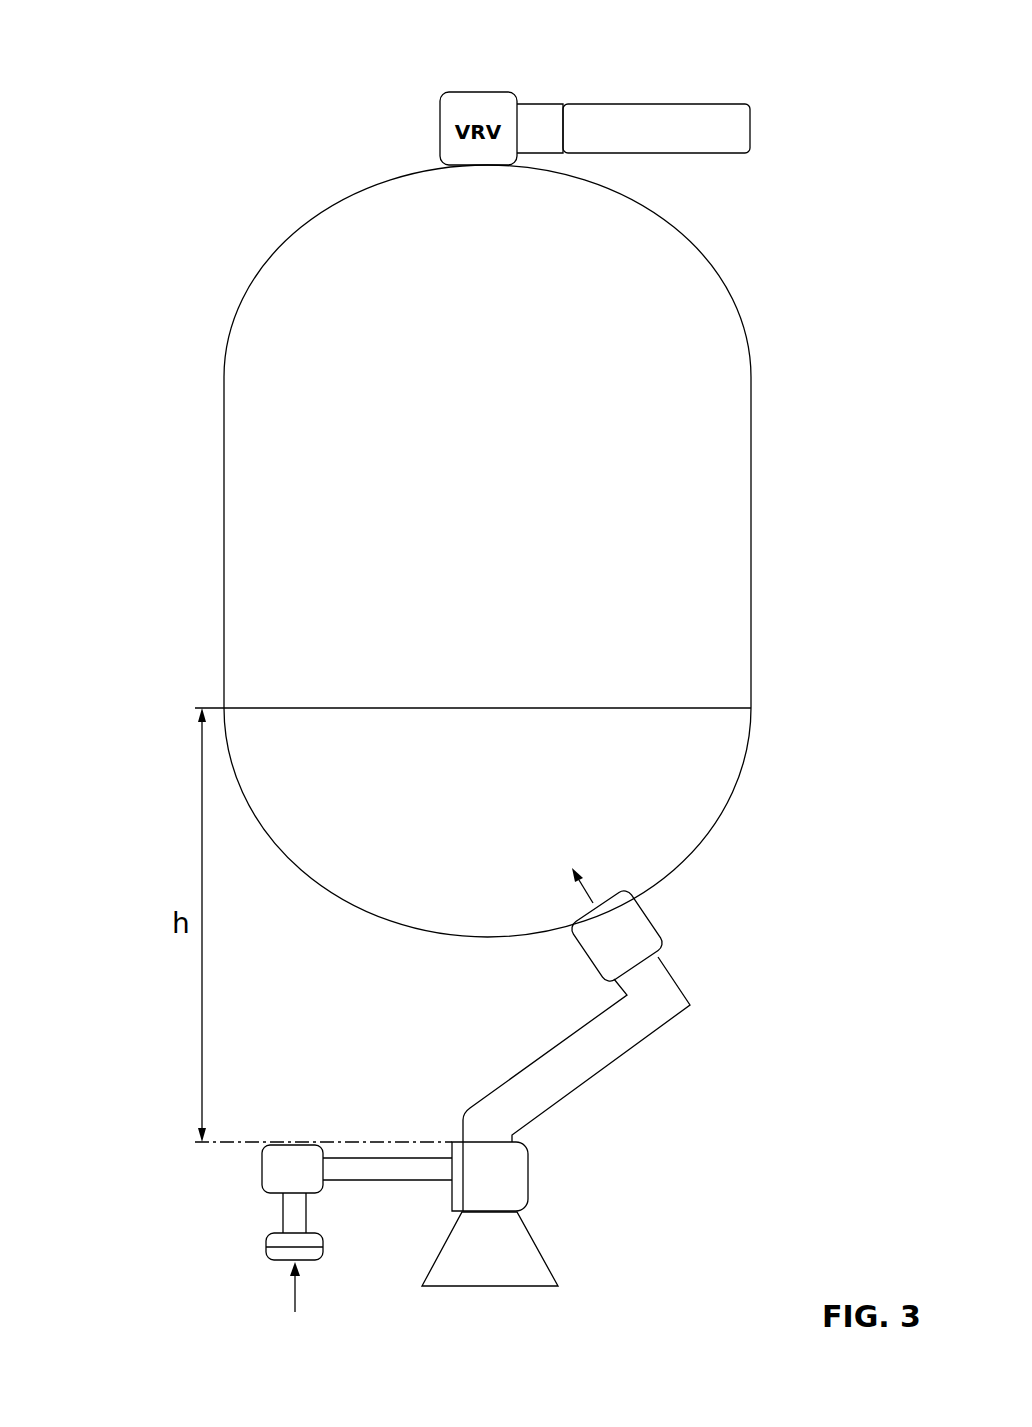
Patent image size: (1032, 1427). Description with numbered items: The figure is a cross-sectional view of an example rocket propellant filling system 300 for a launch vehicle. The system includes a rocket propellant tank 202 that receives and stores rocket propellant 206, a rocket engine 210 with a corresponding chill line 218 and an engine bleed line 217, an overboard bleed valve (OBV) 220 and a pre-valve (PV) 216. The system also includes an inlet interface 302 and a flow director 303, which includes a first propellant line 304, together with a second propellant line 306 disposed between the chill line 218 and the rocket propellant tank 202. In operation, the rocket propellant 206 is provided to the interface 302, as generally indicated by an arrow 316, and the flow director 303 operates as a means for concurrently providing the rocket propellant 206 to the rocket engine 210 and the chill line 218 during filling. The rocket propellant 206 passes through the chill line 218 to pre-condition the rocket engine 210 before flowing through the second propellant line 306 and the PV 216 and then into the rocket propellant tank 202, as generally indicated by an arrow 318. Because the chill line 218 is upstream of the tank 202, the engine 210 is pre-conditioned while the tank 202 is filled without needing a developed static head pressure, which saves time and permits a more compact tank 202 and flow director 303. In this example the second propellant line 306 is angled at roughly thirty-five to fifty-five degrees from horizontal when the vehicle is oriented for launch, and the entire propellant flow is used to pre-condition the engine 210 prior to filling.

The rocket propellant filling system 300 is at (129, 29).
The rocket propellant tank 202 is at (792, 327).
The rocket propellant 206 is at (510, 814).
The pre-valve 216 is at (656, 919).
The arrow 318 is at (598, 888).
The second propellant line 306 is at (603, 1058).
The flow director 303 is at (484, 1076).
The chill line 218 is at (447, 1187).
The engine bleed line 217 is at (447, 1158).
The first propellant line 304 is at (366, 1165).
The overboard bleed valve 220 is at (262, 1160).
The interface 302 is at (266, 1240).
The arrow 316 is at (292, 1296).
The rocket engine 210 is at (550, 1310).